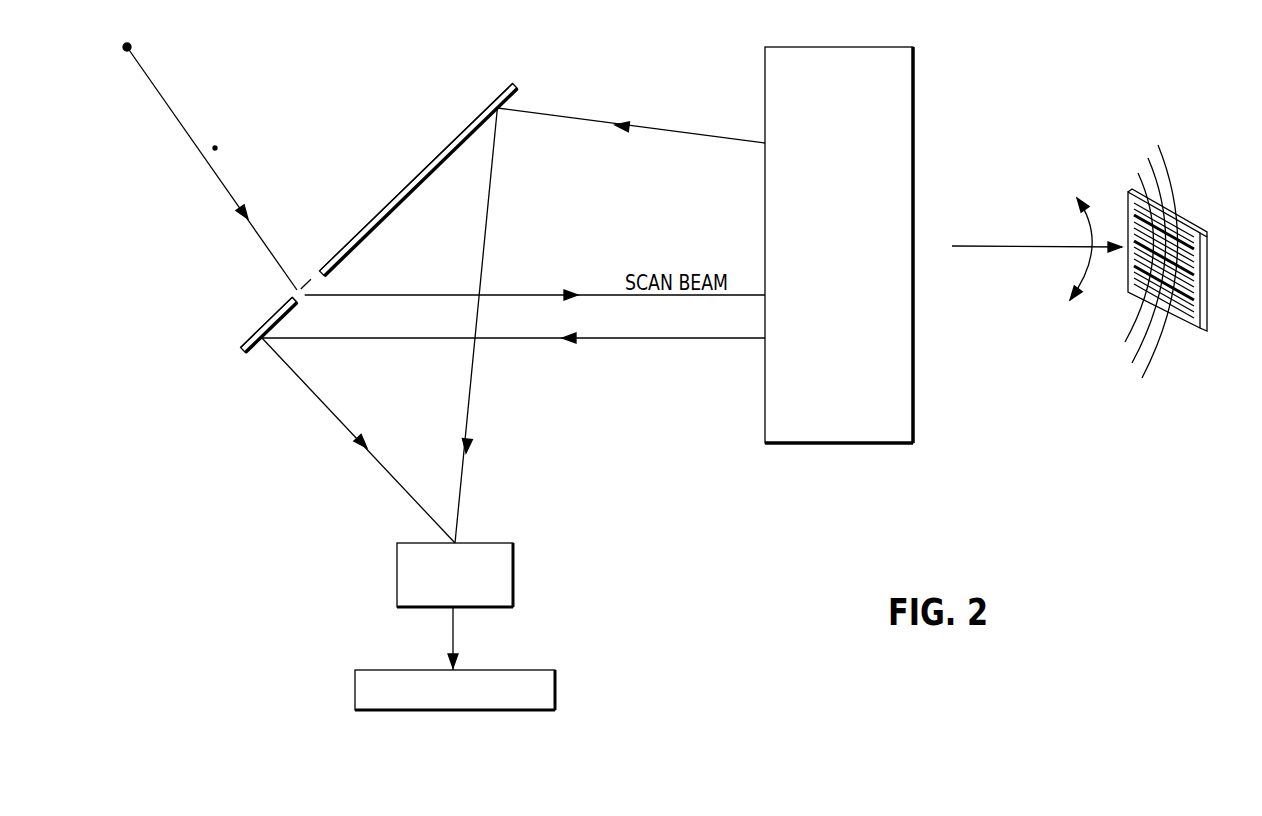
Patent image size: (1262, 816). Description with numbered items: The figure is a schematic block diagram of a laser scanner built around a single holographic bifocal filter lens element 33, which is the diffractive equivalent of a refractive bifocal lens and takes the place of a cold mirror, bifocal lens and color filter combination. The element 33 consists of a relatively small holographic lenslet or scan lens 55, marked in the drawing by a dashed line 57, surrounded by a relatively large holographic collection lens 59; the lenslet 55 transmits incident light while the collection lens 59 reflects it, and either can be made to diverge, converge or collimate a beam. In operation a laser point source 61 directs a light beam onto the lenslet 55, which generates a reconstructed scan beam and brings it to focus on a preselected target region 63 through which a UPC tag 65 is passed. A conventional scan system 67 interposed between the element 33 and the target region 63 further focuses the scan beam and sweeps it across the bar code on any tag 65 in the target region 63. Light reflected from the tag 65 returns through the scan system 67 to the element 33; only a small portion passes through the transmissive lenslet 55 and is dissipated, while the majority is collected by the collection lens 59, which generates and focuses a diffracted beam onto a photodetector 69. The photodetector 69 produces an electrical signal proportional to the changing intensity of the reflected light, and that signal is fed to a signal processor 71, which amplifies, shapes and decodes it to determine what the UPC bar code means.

The holographic bifocal filter lens element 33 is at (342, 233).
The holographic lenslet 55 is at (288, 288).
The dashed line 57 is at (282, 298).
The holographic collection lens 59 is at (373, 219).
The laser point source 61 is at (130, 45).
The target region 63 is at (1178, 172).
The UPC tag 65 is at (1207, 253).
The scan system 67 is at (913, 96).
The photodetector 69 is at (513, 553).
The signal processor 71 is at (520, 670).